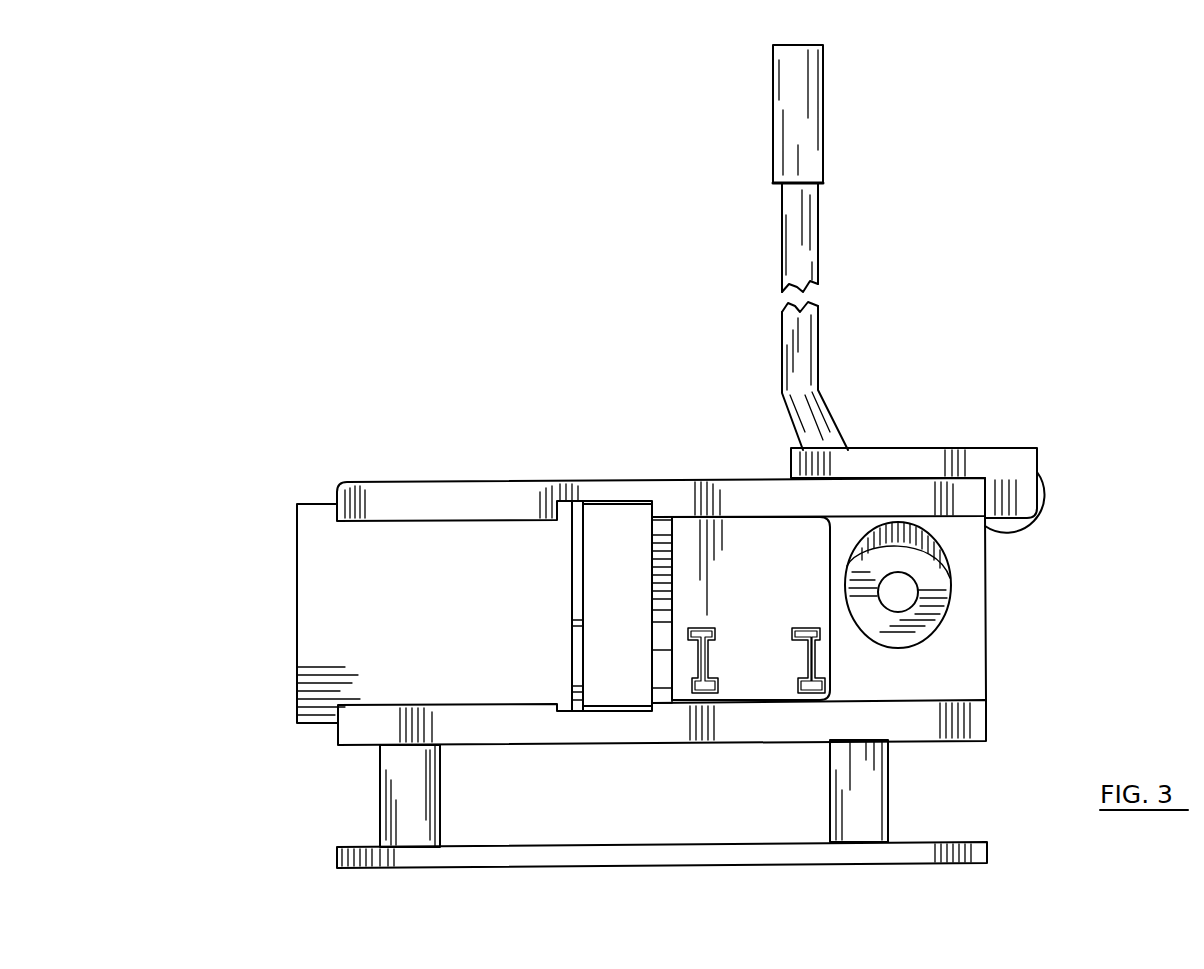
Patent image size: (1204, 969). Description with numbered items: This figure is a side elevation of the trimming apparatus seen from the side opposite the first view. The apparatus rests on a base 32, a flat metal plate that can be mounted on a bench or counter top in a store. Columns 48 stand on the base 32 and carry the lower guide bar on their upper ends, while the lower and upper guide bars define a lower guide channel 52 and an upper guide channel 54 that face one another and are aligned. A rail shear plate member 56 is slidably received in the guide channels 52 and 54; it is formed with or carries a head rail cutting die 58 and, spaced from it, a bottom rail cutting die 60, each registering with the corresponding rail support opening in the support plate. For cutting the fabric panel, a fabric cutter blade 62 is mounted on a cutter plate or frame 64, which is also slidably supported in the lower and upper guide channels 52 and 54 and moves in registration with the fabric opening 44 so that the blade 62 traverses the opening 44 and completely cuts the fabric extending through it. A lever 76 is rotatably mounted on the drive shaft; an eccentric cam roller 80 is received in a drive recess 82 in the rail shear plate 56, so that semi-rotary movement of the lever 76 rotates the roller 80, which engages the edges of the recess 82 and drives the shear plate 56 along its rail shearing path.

The base 32 is at (556, 857).
The fabric opening 44 is at (608, 553).
The columns 48 is at (415, 783).
The lower guide channel 52 is at (348, 741).
The upper guide channel 54 is at (442, 497).
The rail shear plate member 56 is at (762, 663).
The head rail cutting die 58 is at (812, 692).
The bottom rail cutting die 60 is at (720, 687).
The fabric cutter blade 62 is at (585, 645).
The cutter plate or frame 64 is at (323, 583).
The lever 76 is at (802, 237).
The eccentric cam roller 80 is at (935, 580).
The drive recess 82 is at (950, 553).